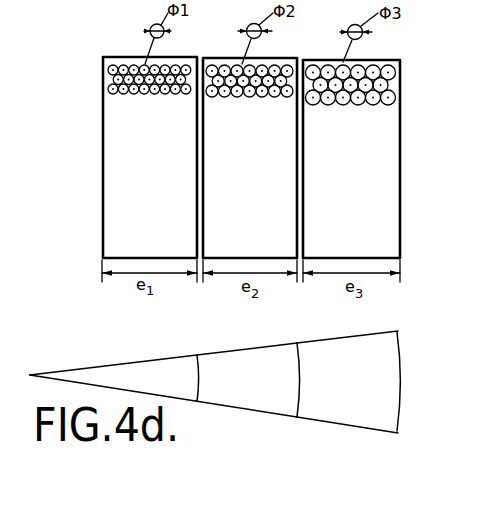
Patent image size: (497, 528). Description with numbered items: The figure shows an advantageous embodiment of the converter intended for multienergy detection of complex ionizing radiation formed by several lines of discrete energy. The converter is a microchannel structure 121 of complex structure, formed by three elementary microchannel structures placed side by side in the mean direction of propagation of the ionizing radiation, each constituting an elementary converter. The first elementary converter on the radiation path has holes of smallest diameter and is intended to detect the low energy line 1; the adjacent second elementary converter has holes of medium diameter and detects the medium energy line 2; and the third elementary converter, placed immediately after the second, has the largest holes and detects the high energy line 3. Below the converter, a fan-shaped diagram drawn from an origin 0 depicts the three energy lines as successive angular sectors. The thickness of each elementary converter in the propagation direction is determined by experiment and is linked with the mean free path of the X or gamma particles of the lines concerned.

The microchannel structure 121 is at (323, 198).
The origin of angular sector diagram 0 is at (33, 363).
The low energy line 1 is at (114, 378).
The medium energy line 2 is at (248, 380).
The high energy line 3 is at (348, 382).